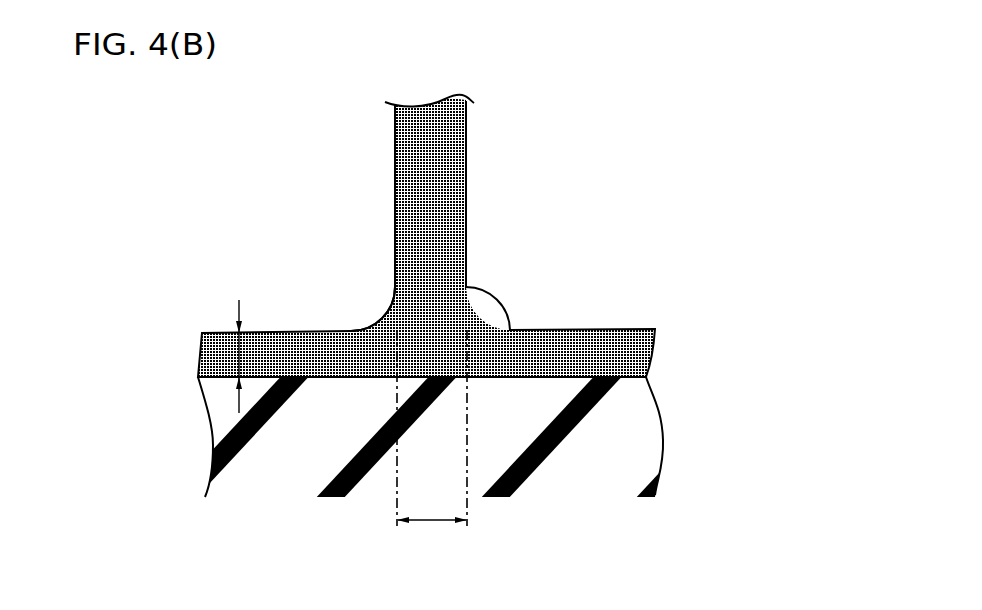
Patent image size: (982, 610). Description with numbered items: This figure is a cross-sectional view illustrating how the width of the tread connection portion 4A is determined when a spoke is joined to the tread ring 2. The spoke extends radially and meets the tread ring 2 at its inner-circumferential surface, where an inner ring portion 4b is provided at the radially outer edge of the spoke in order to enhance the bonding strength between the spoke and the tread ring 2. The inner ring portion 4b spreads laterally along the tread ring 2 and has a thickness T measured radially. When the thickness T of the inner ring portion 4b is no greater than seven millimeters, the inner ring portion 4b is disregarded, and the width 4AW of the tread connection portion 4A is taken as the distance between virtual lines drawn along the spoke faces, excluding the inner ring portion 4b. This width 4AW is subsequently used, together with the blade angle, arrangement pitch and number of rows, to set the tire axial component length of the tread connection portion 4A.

The tread connection portion 4A is at (356, 295).
The inner ring portion 4b is at (558, 357).
The tread ring 2 is at (625, 420).
The thickness of the inner ring portion T is at (238, 347).
The width of the tread connection portion 4AW is at (432, 446).